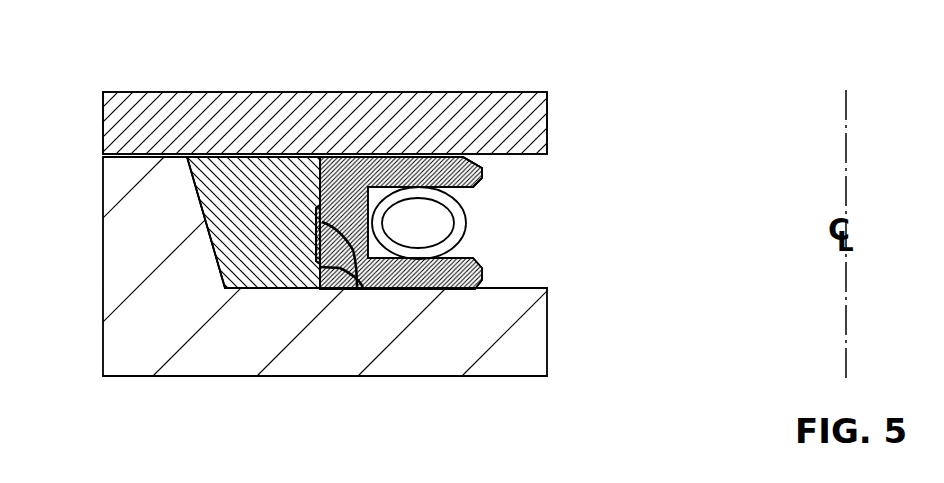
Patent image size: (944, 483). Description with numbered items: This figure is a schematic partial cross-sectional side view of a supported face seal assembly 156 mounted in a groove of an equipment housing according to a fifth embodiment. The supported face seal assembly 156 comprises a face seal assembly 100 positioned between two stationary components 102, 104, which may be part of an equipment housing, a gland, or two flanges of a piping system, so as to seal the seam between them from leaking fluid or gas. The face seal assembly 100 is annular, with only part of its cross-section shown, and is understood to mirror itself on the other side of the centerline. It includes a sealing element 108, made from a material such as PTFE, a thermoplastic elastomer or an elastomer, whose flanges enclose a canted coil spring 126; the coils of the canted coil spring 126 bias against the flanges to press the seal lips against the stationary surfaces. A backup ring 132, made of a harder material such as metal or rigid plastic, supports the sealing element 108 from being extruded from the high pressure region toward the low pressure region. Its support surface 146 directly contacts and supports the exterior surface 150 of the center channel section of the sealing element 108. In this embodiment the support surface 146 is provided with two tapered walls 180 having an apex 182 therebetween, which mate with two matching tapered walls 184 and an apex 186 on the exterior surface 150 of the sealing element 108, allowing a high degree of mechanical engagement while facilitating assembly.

The face seal assembly 100 is at (357, 148).
The first stationary component 102 is at (550, 120).
The second stationary component 104 is at (525, 360).
The sealing element 108 is at (443, 145).
The canted coil spring 126 is at (485, 228).
The backup ring 132 is at (200, 207).
The support surface 146 is at (315, 239).
The exterior surface 150 is at (313, 205).
The supported face seal assembly 156 is at (570, 198).
The tapered walls 180 is at (316, 203).
The apex 182 is at (316, 223).
The tapered walls 184 is at (378, 156).
The apex 186 is at (363, 287).